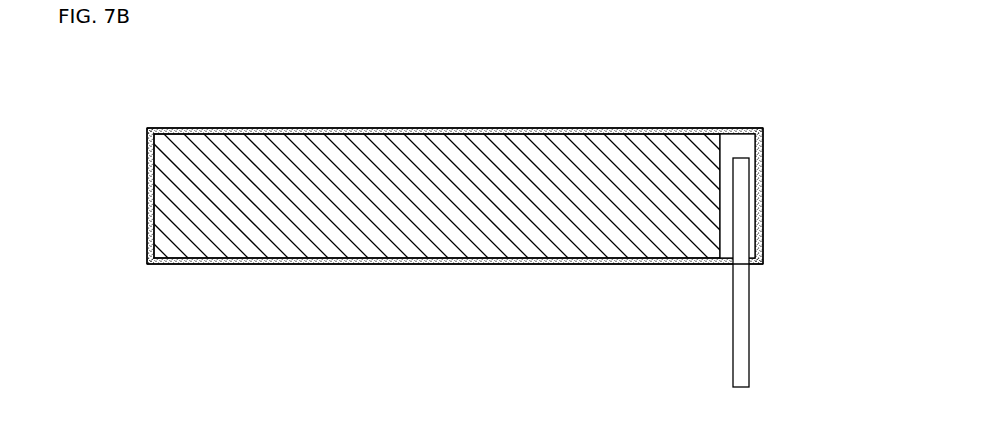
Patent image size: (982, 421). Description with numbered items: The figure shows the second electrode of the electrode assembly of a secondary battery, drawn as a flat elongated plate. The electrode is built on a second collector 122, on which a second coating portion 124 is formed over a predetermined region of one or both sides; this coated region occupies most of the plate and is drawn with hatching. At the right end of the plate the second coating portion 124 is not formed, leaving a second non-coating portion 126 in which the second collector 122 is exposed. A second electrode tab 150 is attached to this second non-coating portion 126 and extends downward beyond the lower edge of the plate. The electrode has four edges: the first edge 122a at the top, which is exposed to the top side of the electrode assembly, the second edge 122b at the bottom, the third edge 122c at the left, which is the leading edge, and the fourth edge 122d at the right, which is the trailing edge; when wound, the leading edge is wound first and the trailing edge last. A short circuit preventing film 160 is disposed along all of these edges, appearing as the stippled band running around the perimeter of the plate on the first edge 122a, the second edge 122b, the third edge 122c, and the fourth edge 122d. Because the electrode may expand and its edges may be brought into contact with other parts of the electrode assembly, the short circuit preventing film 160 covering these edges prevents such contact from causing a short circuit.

The second collector 122 is at (147, 153).
The first edge 122a is at (440, 104).
The second edge 122b is at (440, 280).
The third edge 122c is at (139, 207).
The fourth edge 122d is at (768, 192).
The second coating portion 124 is at (500, 160).
The second non-coating portion 126 is at (745, 147).
The second electrode tab 150 is at (740, 313).
The short circuit preventing film 160 is at (258, 132).